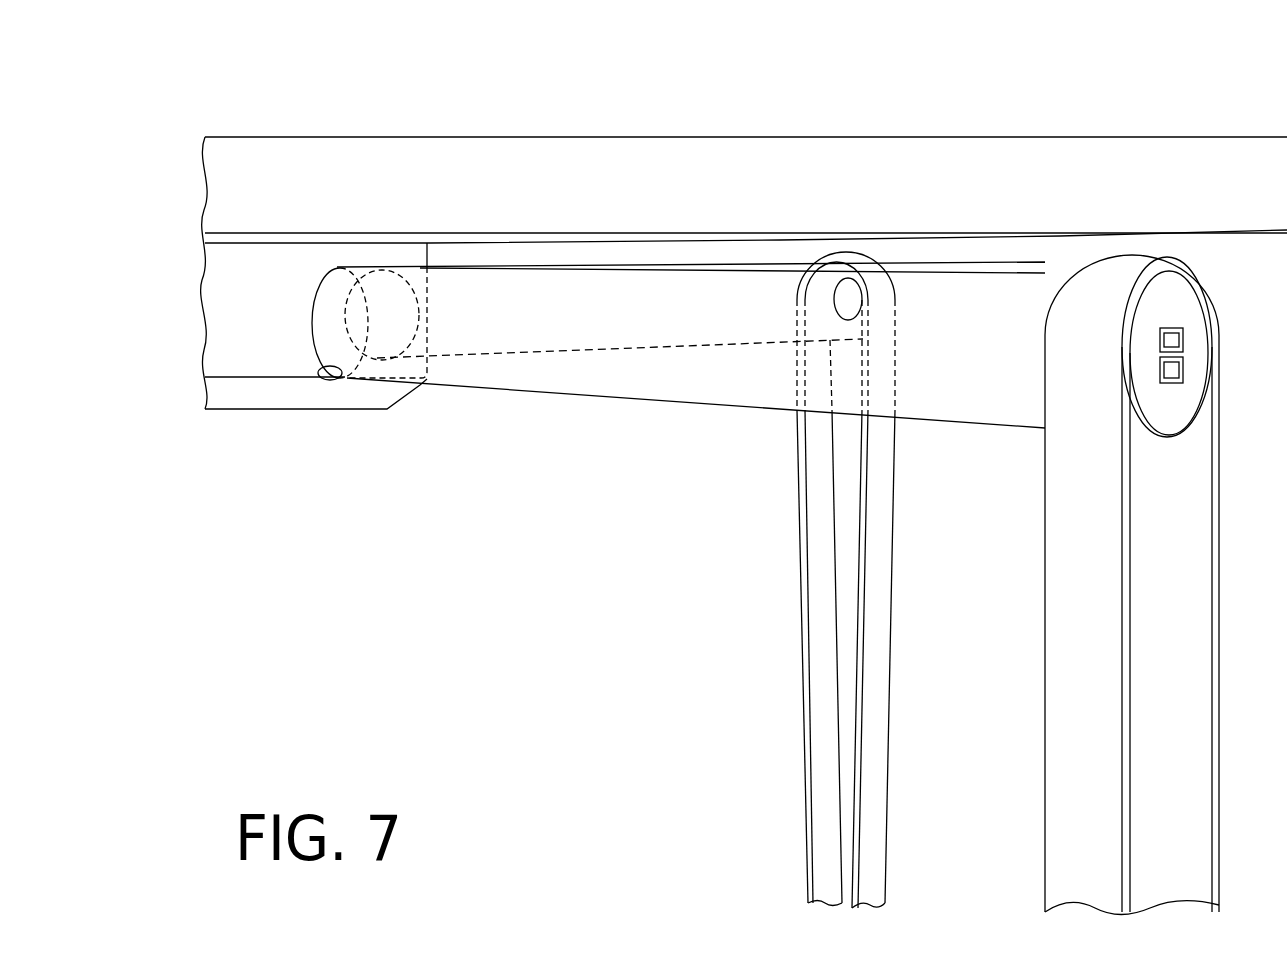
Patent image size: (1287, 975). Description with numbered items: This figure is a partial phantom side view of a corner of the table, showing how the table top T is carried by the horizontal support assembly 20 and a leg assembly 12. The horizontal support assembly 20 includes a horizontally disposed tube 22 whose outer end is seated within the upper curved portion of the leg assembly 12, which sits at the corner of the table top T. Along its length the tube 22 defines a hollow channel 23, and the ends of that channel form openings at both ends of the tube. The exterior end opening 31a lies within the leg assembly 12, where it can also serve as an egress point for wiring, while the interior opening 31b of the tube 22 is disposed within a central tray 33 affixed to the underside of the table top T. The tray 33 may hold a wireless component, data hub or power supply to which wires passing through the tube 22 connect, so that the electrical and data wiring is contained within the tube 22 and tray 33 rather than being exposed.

The table top T is at (773, 137).
The central tray 33 is at (282, 400).
The horizontal support assembly 20 is at (578, 404).
The tube 22 is at (528, 293).
The hollow channel 23 is at (332, 287).
The interior opening 31b is at (337, 380).
The end opening 31a is at (850, 290).
The leg assembly 12 is at (882, 648).